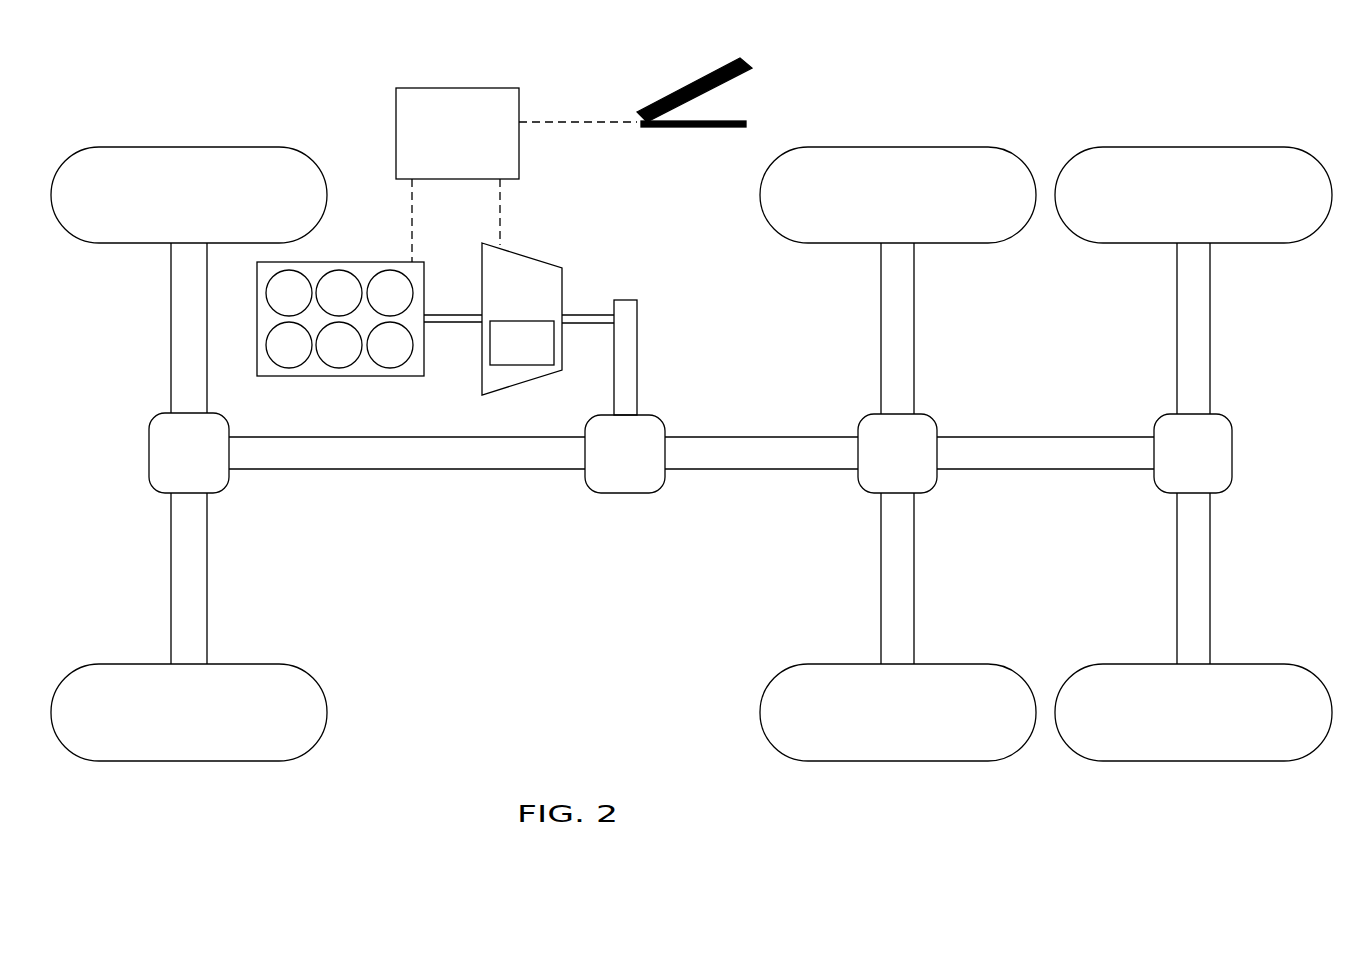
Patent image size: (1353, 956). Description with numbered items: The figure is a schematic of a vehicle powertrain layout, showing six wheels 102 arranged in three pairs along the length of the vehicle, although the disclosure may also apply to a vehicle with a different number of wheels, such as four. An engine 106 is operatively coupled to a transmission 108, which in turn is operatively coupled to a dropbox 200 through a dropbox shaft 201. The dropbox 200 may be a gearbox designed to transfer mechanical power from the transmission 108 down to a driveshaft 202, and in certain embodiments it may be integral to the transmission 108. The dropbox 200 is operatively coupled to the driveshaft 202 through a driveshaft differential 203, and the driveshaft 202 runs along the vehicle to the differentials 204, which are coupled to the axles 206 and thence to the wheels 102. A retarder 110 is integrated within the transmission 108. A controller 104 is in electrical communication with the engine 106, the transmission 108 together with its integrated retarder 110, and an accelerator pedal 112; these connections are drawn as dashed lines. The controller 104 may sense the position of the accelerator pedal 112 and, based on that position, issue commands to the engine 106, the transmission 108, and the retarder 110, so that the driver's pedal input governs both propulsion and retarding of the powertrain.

The wheels 102 is at (267, 178).
The controller 104 is at (516, 175).
The engine 106 is at (363, 365).
The transmission 108 is at (535, 255).
The retarder 110 is at (522, 343).
The accelerator pedal 112 is at (712, 128).
The dropbox 200 is at (637, 367).
The dropbox shaft 201 is at (583, 320).
The driveshaft 202 is at (387, 472).
The driveshaft differential 203 is at (635, 470).
The differentials 204 is at (198, 460).
The axles 206 is at (198, 548).